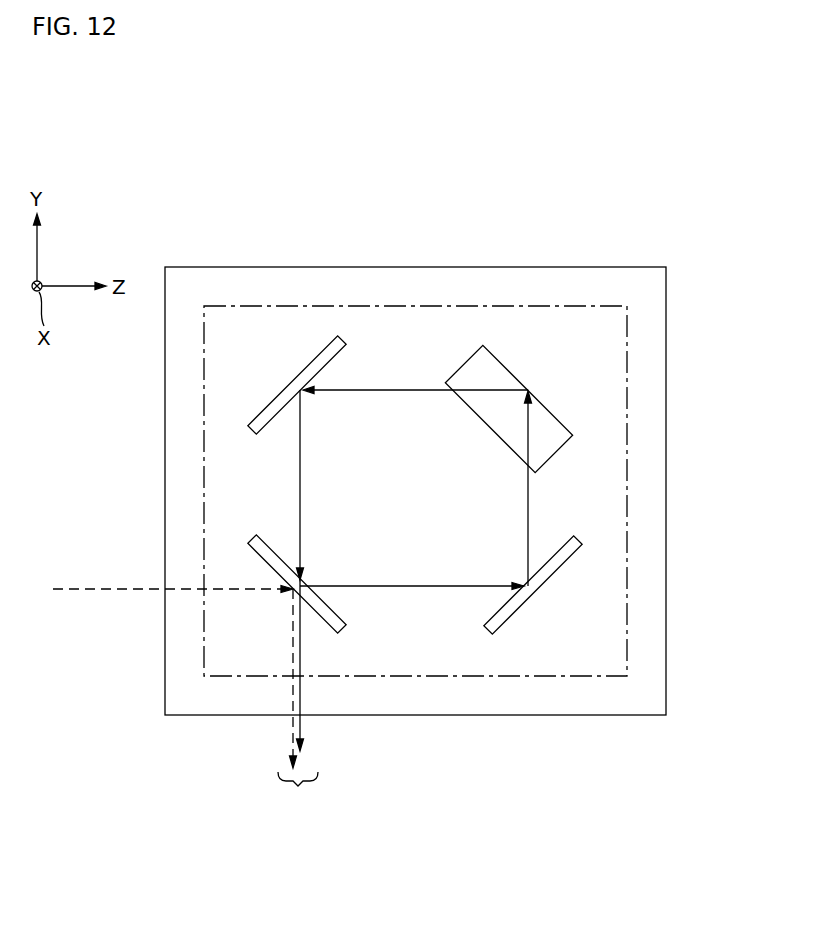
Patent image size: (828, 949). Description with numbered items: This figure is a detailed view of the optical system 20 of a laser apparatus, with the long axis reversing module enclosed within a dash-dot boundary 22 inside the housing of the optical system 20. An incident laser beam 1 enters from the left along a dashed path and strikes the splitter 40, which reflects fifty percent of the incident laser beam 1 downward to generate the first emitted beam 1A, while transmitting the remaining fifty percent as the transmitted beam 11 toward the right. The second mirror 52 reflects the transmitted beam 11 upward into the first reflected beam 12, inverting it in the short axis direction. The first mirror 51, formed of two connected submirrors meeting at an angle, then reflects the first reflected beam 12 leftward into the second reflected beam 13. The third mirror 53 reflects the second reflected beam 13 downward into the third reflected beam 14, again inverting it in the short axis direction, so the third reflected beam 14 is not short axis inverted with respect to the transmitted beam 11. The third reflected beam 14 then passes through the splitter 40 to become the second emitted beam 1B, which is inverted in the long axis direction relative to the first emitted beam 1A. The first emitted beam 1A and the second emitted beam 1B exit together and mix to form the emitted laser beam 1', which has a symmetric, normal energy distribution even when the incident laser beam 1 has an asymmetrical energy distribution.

The optical system 20 is at (666, 337).
The optical region boundary 22 is at (627, 393).
The second reflected beam 13 is at (388, 390).
The third reflected beam 14 is at (300, 483).
The first reflected beam 12 is at (528, 495).
The transmitted beam 11 is at (433, 588).
The third mirror 53 is at (340, 340).
The first mirror 51 is at (484, 346).
The splitter 40 is at (253, 550).
The second mirror 52 is at (568, 552).
The incident laser beam 1 is at (173, 560).
The first emitted beam 1A is at (302, 736).
The second emitted beam 1B is at (300, 723).
The emitted laser beam 1' is at (298, 792).